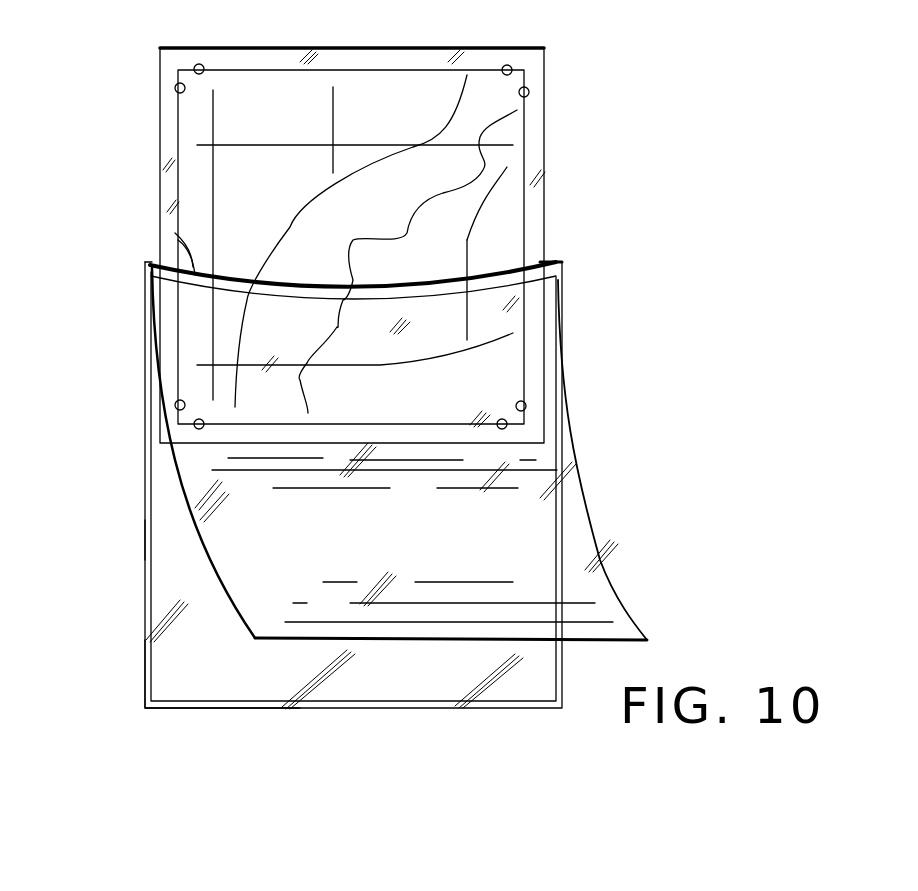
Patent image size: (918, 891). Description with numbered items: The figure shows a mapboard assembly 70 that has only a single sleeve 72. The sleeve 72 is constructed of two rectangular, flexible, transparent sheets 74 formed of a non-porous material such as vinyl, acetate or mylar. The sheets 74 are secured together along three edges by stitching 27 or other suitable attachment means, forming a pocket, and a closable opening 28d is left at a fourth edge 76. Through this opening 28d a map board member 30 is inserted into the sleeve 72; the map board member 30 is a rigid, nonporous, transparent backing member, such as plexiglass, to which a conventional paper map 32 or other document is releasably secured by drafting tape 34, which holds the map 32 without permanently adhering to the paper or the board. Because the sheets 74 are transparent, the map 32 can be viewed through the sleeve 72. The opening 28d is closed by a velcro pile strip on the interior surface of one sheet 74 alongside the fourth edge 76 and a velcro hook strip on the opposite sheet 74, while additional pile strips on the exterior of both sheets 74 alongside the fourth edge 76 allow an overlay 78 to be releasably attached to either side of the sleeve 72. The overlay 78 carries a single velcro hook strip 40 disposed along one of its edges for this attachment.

The stitching 27 is at (148, 658).
The closable opening 28d is at (545, 258).
The map board member 30 is at (349, 60).
The paper map 32 is at (516, 157).
The drafting tape 34 is at (200, 64).
The velcro hook strip 40 is at (548, 282).
The mapboard assembly 70 is at (582, 340).
The sleeve 72 is at (163, 543).
The sheets 74 is at (370, 677).
The fourth edge 76 is at (170, 255).
The overlay 78 is at (582, 530).